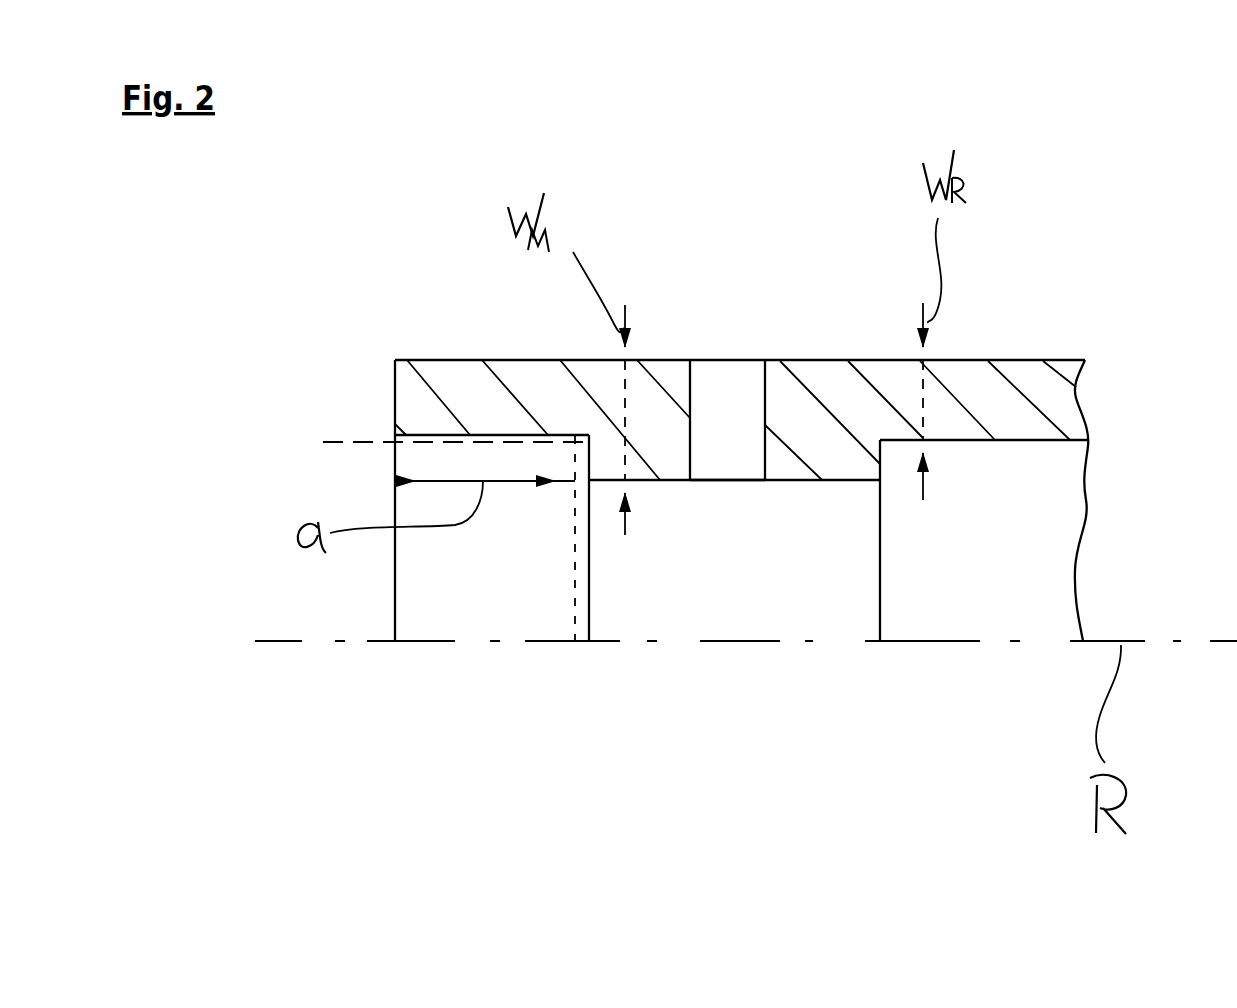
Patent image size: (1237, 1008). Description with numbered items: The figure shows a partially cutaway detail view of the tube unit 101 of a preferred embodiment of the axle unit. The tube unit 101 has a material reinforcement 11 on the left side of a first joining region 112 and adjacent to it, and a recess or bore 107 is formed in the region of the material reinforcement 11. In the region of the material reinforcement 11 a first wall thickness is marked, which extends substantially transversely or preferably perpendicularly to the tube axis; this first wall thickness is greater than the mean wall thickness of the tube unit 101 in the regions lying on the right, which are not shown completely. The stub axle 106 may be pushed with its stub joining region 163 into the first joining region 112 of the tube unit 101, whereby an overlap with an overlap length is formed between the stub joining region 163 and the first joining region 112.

The tube unit 101 is at (978, 392).
The stub axle 106 is at (390, 442).
The recess or bore 107 is at (760, 397).
The stub joining region 163 is at (487, 444).
The first joining region 112 is at (582, 650).
The material reinforcement 11 is at (870, 658).